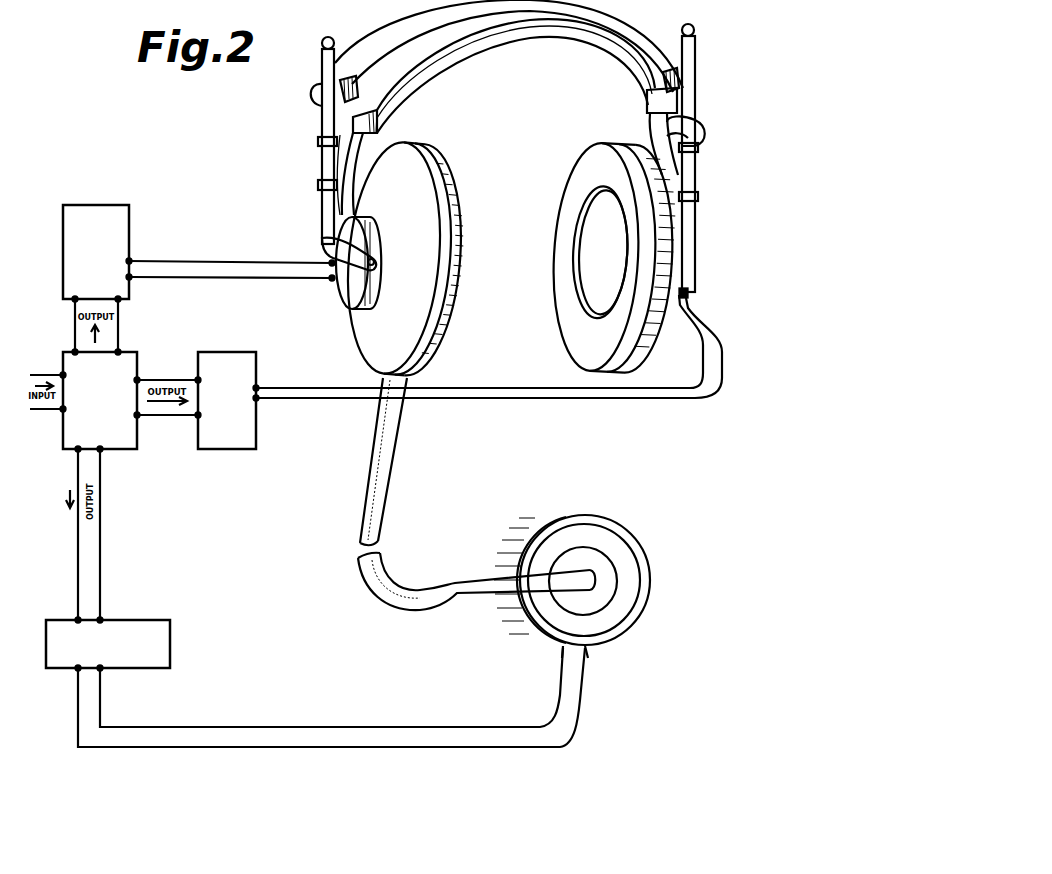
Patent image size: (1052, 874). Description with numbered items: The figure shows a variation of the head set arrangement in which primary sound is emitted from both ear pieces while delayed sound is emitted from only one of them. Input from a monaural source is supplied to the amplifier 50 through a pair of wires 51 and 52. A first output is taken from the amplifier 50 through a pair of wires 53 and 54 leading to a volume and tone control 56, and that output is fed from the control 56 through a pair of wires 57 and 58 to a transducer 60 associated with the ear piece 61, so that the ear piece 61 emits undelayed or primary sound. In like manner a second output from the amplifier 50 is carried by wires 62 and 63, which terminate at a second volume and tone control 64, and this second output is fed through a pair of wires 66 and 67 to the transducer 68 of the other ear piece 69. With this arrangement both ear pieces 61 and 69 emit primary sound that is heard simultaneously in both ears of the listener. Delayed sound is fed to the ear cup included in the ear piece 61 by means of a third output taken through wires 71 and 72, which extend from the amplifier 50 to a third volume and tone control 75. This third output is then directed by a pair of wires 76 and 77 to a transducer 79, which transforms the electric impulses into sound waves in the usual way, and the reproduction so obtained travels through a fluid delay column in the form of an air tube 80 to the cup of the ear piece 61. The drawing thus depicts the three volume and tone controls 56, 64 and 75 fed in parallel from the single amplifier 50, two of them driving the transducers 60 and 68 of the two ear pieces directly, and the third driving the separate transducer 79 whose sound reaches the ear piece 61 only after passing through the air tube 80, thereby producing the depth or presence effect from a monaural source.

The amplifier 50 is at (118, 443).
The wire 51 is at (45, 374).
The wire 52 is at (47, 411).
The wire 53 is at (72, 320).
The wire 54 is at (116, 328).
The volume and tone control 56 is at (118, 205).
The wire 57 is at (190, 260).
The wire 58 is at (215, 278).
The transducer 60 is at (343, 298).
The ear piece 61 is at (418, 148).
The wire 62 is at (160, 379).
The wire 63 is at (158, 417).
The volume and tone control 64 is at (217, 449).
The wire 66 is at (479, 388).
The wire 67 is at (507, 399).
The transducer 68 is at (699, 299).
The ear piece 69 is at (586, 162).
The wire 71 is at (77, 567).
The wire 72 is at (101, 587).
The volume and tone control 75 is at (166, 636).
The wire 76 is at (301, 727).
The wire 77 is at (331, 750).
The transducer 79 is at (644, 615).
The air tube 80 is at (389, 522).